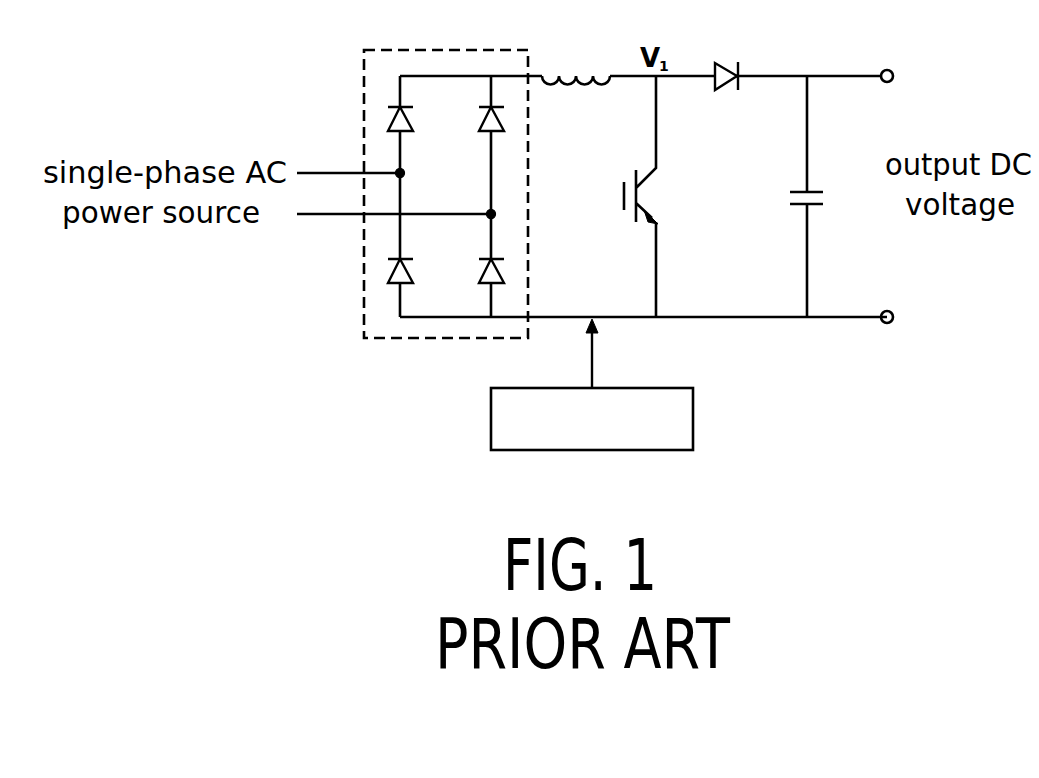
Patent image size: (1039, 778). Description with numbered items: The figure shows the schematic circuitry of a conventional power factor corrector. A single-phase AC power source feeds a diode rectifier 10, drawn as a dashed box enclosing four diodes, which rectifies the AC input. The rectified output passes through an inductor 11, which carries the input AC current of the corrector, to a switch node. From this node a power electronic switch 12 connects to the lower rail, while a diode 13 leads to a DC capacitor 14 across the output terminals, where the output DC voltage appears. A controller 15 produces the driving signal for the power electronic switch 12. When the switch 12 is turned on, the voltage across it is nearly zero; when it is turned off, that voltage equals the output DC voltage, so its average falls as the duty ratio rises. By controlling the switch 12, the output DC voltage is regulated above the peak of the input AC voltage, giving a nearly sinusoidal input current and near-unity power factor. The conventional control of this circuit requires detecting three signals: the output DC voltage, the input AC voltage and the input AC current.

The diode rectifier 10 is at (427, 341).
The inductor 11 is at (573, 62).
The power electronic switch 12 is at (663, 178).
The diode 13 is at (730, 61).
The DC capacitor 14 is at (820, 191).
The controller 15 is at (677, 435).